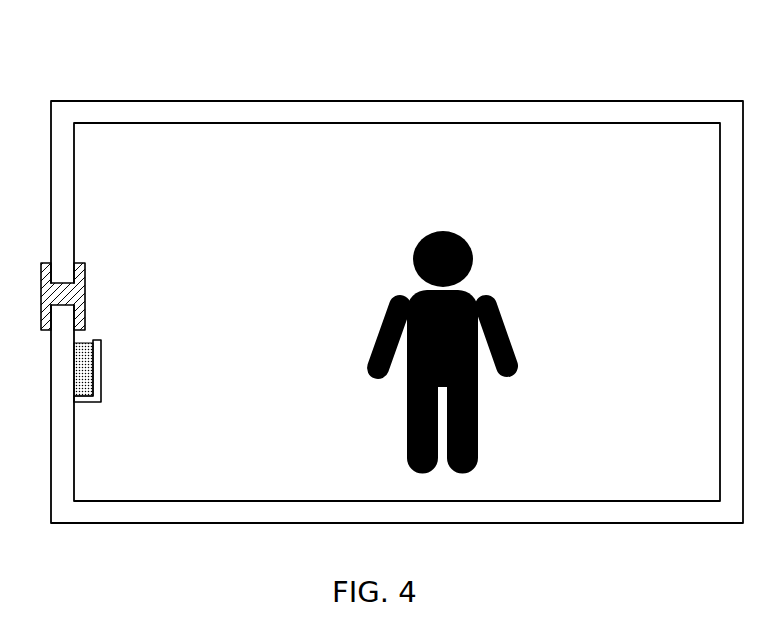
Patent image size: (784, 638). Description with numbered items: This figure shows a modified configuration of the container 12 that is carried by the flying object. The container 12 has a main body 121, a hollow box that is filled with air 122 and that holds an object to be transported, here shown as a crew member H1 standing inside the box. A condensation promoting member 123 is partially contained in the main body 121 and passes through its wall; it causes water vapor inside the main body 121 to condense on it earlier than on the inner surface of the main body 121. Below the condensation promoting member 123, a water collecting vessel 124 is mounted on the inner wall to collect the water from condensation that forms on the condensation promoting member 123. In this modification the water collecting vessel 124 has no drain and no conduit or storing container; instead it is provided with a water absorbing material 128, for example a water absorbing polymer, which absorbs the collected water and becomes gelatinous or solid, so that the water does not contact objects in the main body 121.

The container 12 is at (590, 61).
The main body 121 is at (330, 113).
The air 122 is at (315, 228).
The condensation promoting member 123 is at (82, 282).
The water collecting vessel 124 is at (102, 348).
The water absorbing material 128 is at (83, 378).
The crew member H1 is at (442, 230).